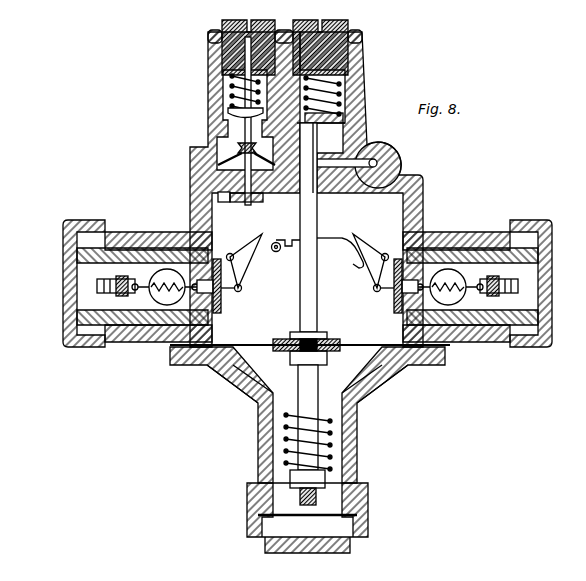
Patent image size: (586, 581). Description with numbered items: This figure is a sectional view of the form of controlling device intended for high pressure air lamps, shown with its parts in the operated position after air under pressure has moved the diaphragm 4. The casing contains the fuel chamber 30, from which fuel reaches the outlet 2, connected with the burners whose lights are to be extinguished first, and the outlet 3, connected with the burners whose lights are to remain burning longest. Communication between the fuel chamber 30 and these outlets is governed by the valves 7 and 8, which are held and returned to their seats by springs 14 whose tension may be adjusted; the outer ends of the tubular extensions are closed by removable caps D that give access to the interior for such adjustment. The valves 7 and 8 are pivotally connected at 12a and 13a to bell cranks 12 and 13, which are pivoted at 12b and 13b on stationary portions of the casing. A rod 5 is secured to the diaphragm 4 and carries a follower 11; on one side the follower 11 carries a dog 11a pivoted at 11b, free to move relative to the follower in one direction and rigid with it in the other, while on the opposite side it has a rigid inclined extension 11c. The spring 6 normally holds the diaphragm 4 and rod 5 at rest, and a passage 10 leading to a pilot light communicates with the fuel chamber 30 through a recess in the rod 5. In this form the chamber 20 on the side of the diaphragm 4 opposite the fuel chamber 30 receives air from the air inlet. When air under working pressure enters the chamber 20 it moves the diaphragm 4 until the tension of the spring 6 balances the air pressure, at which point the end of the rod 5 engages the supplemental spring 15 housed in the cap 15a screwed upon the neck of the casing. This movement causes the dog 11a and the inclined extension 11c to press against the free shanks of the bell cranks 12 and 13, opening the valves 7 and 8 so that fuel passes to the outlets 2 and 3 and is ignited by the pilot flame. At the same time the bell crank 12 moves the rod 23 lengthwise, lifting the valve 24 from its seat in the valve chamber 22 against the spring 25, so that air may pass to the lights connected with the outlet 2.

The outlet 2 is at (164, 268).
The outlet 3 is at (461, 268).
The diaphragm 4 is at (370, 346).
The rod 5 is at (316, 288).
The spring 6 is at (276, 430).
The valve 7 is at (398, 292).
The valve 8 is at (222, 291).
The passage 10 is at (358, 162).
The follower 11 is at (341, 238).
The dog 11a is at (277, 243).
The pivot of the dog 11b is at (279, 253).
The inclined extension 11c is at (355, 260).
The bell crank 12 is at (248, 250).
The pivotal connection 12a is at (228, 245).
The pivot of bell crank 12b is at (241, 289).
The bell crank 13 is at (360, 241).
The pivotal connection 13a is at (386, 254).
The pivot of bell crank 13b is at (374, 288).
The spring 14 is at (162, 271).
The supplemental spring 15 is at (340, 98).
The cap 15a is at (366, 508).
The chamber 20 is at (258, 366).
The valve chamber 22 is at (222, 148).
The rod 23 is at (248, 223).
The valve 24 is at (232, 113).
The spring 25 is at (250, 87).
The fuel chamber 30 is at (415, 196).
The removable caps D is at (66, 286).